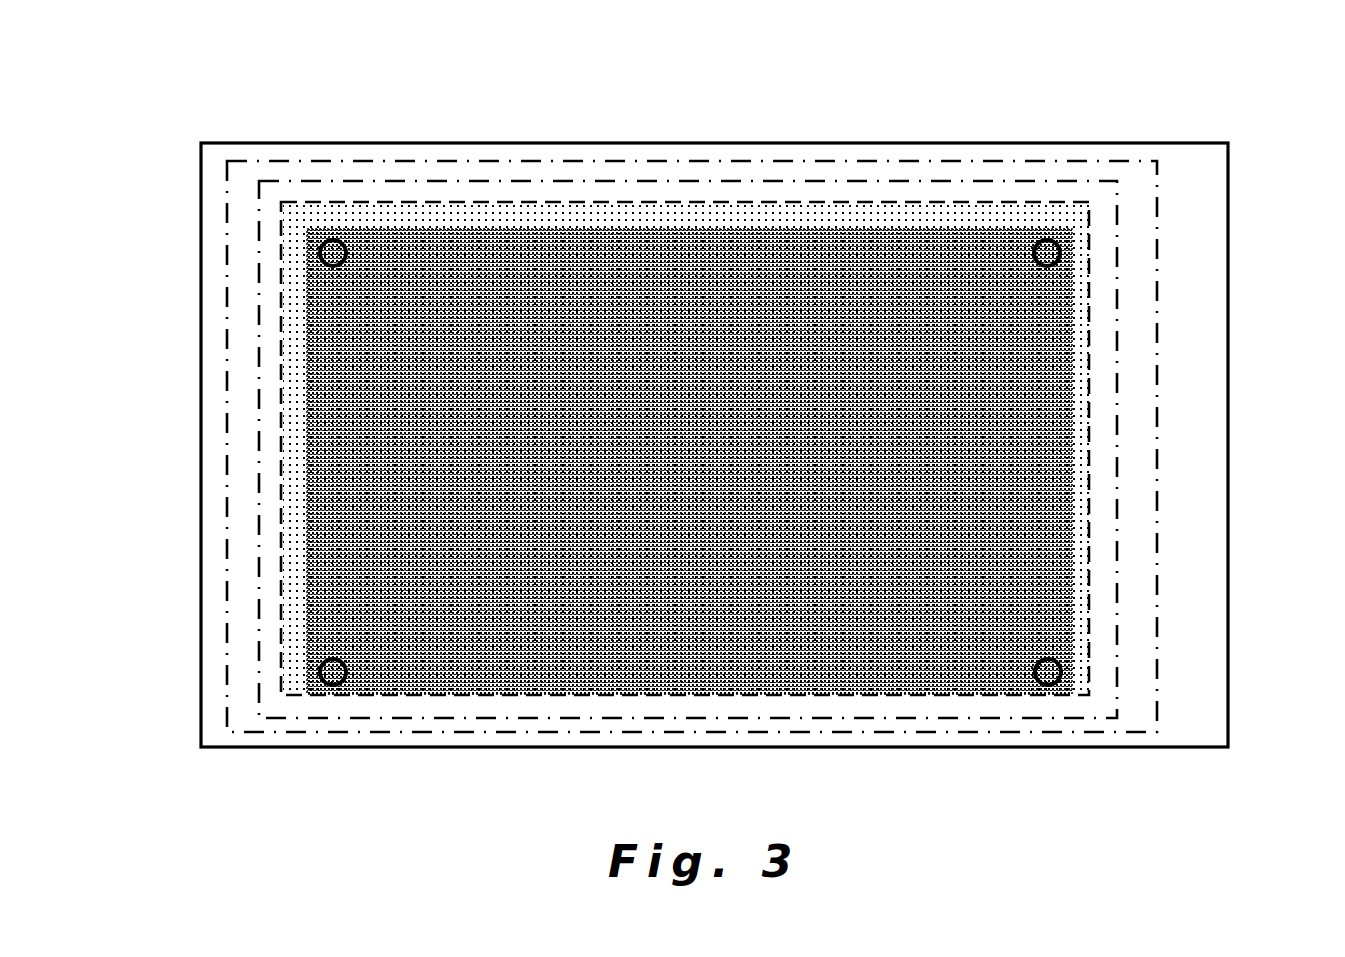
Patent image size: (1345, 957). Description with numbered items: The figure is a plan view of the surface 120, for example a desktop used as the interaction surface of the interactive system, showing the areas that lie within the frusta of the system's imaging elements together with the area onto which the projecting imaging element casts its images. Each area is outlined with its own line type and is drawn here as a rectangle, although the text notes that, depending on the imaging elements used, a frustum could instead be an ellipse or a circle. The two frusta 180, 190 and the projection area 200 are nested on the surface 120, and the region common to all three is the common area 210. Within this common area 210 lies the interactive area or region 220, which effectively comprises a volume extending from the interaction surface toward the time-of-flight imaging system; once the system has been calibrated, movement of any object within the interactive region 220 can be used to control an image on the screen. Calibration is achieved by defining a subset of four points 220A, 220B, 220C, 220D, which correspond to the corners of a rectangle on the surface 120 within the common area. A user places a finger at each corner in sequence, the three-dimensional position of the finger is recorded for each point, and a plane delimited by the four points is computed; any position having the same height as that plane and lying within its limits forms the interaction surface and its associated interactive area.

The surface 120 is at (235, 142).
The frustum 180 is at (378, 160).
The frustum 190 is at (492, 179).
The area 200 is at (1033, 201).
The common area 210 is at (880, 208).
The interactive area or region 220 is at (689, 461).
The point 220A is at (1062, 251).
The point 220B is at (1062, 670).
The point 220C is at (320, 678).
The point 220D is at (318, 253).